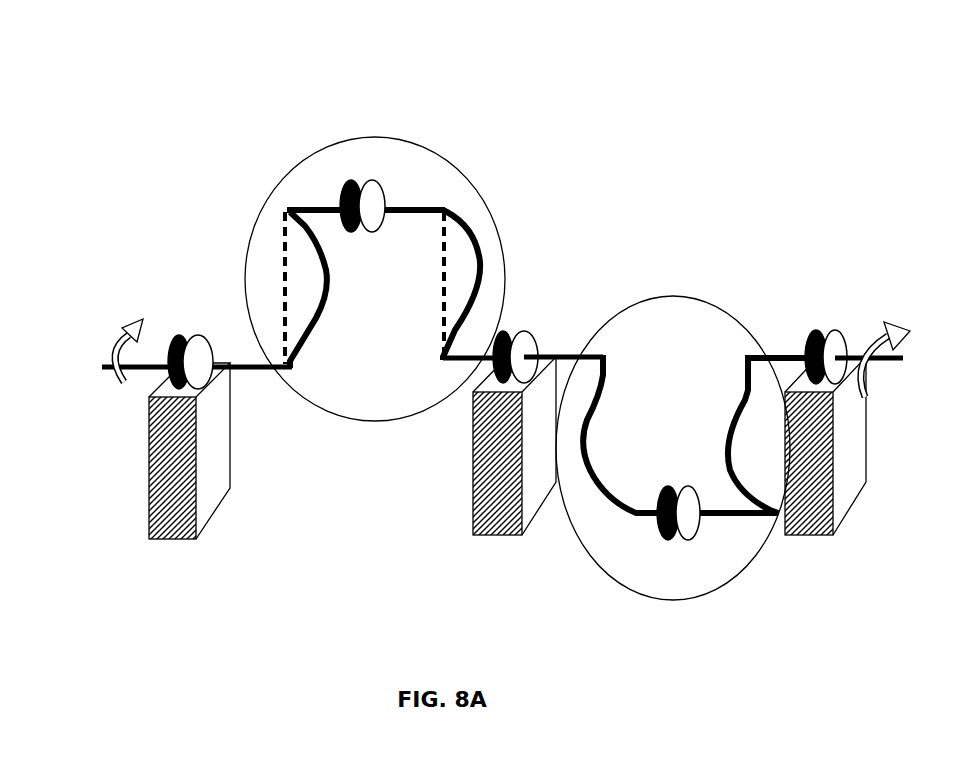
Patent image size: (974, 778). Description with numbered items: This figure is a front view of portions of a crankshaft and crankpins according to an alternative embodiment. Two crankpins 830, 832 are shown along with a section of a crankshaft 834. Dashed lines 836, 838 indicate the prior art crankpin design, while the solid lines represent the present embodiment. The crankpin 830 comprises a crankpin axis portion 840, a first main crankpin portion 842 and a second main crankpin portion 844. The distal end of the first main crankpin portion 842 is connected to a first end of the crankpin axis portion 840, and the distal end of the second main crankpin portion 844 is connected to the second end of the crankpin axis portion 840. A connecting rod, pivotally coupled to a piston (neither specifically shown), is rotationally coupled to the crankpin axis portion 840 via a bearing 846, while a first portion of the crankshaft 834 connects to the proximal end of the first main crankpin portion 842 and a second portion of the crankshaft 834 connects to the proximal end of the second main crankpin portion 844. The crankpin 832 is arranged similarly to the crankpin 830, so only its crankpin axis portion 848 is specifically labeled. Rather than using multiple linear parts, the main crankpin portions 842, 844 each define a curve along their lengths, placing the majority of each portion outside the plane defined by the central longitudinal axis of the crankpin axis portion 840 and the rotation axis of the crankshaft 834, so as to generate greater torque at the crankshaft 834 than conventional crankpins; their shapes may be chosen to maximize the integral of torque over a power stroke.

The crankpin 830 is at (319, 133).
The crankpin 832 is at (759, 577).
The crankshaft 834 is at (97, 381).
The dashed line 836 is at (268, 299).
The dashed line 838 is at (458, 275).
The crankpin axis portion 840 is at (410, 194).
The first main crankpin portion 842 is at (302, 246).
The second main crankpin portion 844 is at (478, 222).
The bearing 846 is at (330, 191).
The crankpin axis portion 848 is at (639, 528).